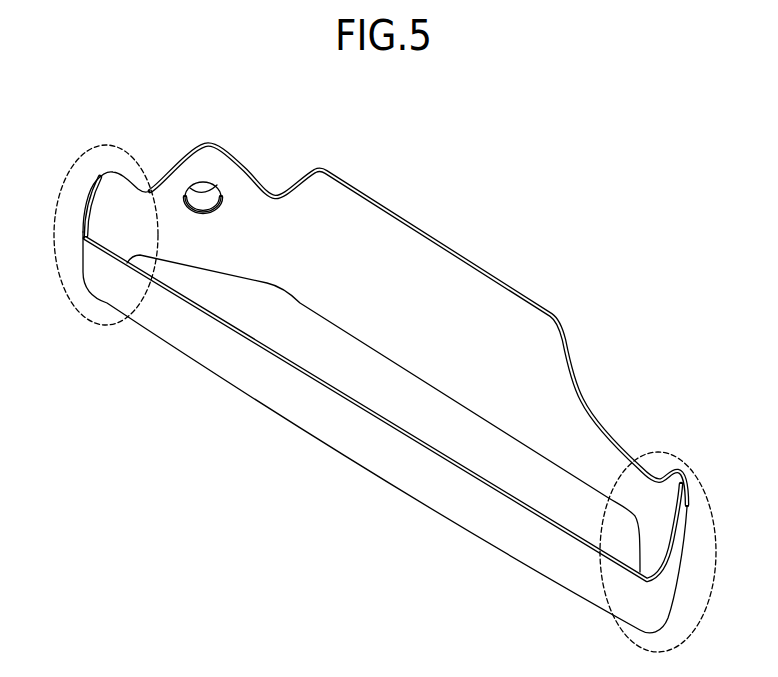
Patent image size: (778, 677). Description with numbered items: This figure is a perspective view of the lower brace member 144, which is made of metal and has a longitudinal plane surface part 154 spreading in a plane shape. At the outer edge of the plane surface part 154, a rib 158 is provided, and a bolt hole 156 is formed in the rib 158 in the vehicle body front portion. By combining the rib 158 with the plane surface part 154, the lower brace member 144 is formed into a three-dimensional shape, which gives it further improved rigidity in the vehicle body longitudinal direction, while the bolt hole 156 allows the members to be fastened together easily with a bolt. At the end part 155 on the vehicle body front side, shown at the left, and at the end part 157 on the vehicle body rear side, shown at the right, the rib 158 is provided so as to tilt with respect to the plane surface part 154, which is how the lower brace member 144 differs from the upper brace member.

The lower brace member 144 is at (407, 171).
The plane surface part 154 is at (380, 377).
The end part 155 is at (97, 144).
The bolt hole 156 is at (200, 192).
The end part 157 is at (661, 452).
The rib 158 is at (478, 287).